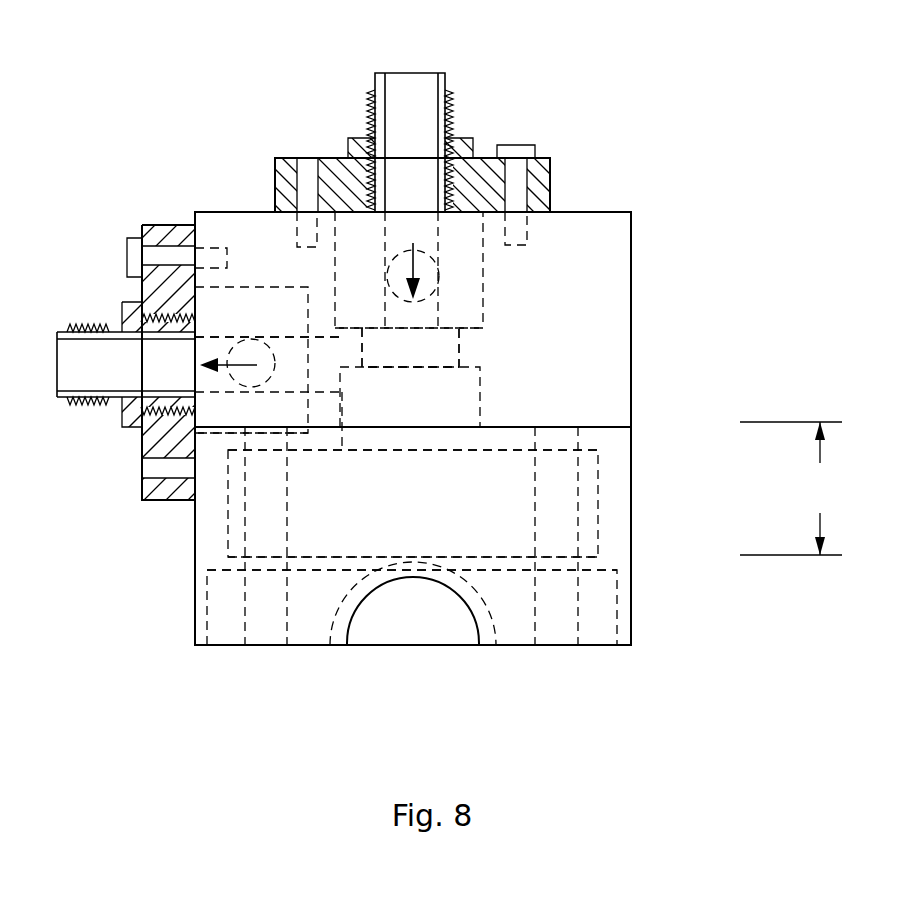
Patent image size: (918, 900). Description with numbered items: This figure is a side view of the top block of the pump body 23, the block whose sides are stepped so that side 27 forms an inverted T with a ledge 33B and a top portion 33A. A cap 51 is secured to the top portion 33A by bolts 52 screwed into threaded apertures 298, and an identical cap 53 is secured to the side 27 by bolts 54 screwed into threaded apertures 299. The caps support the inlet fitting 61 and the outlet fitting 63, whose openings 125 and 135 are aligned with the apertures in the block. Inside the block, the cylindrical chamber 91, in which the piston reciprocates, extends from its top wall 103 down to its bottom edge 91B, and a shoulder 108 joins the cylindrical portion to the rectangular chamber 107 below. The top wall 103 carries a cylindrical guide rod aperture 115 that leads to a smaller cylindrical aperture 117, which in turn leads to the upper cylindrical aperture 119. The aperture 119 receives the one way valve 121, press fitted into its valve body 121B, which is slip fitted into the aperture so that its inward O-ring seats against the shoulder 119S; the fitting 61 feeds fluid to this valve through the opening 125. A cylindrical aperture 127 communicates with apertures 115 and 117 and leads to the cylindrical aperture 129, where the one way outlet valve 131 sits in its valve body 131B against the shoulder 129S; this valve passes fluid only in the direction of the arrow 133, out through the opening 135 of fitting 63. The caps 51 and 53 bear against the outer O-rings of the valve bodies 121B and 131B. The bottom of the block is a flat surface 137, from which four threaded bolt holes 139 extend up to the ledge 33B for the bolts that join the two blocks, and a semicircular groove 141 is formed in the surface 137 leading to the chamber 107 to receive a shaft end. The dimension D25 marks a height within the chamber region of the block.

The side 27 is at (195, 605).
The top portion 33A is at (598, 212).
The ledge 33B is at (602, 422).
The threaded aperture 298 is at (530, 235).
The opening 125 is at (422, 88).
The inlet fitting 61 is at (453, 98).
The body 23 is at (413, 243).
The bolt 52 is at (542, 152).
The cap 51 is at (548, 190).
The threaded aperture 299 is at (218, 247).
The one way outlet valve 131 is at (213, 343).
The arrow 133 is at (257, 360).
The cap 53 is at (170, 225).
The bolt 54 is at (126, 255).
The valve body 131B is at (236, 370).
The cylindrical aperture 129 is at (222, 288).
The shoulder 129S is at (307, 408).
The cylindrical aperture 127 is at (310, 369).
The opening 135 is at (57, 360).
The outlet fitting 63 is at (64, 400).
The one way valve 121 is at (405, 323).
The valve body 121B is at (463, 286).
The upper cylindrical aperture 119 is at (488, 293).
The shoulder 119S is at (478, 328).
The cylindrical aperture 117 is at (462, 350).
The cylindrical guide rod aperture 115 is at (485, 395).
The top wall 103 is at (515, 455).
The cylindrical chamber 91 is at (598, 482).
The threaded bolt hole 139 is at (548, 520).
The bottom edge 91B is at (598, 557).
The shoulder 108 is at (596, 565).
The rectangular chamber 107 is at (602, 624).
The semicircular groove 141 is at (472, 625).
The flat surface 137 is at (513, 645).
The diameter dimension D25 is at (792, 488).